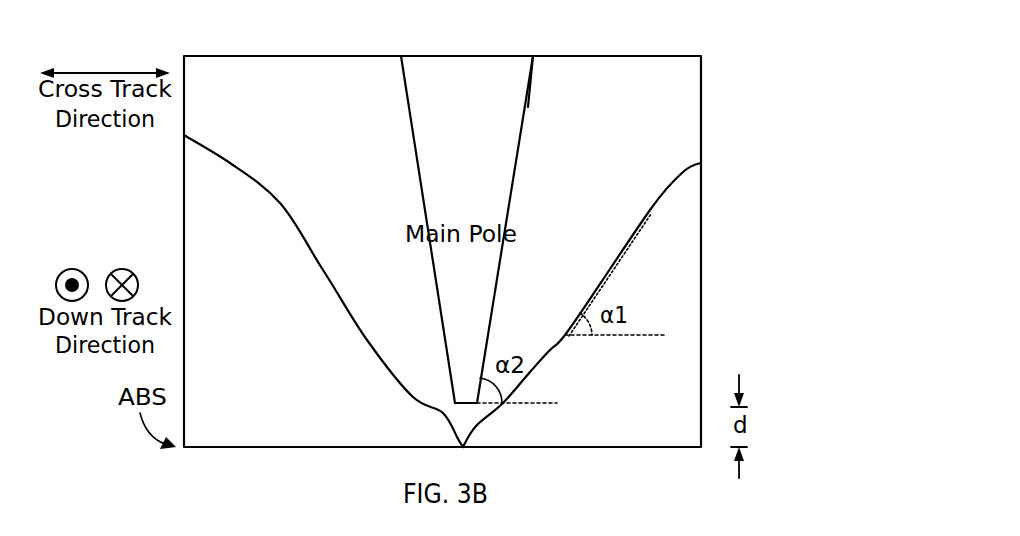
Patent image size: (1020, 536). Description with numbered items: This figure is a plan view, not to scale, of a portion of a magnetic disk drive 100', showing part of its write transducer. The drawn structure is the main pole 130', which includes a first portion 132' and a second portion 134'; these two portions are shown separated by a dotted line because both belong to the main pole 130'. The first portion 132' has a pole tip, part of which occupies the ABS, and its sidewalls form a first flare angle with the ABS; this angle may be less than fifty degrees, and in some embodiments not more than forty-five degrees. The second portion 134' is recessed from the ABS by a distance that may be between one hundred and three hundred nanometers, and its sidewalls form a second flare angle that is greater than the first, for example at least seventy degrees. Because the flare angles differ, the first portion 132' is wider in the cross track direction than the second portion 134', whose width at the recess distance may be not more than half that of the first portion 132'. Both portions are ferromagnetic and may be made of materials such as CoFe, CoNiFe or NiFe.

The magnetic disk drive 100' is at (442, 228).
The main pole 130' is at (624, 305).
The first portion 132' is at (286, 291).
The second portion 134' is at (644, 75).